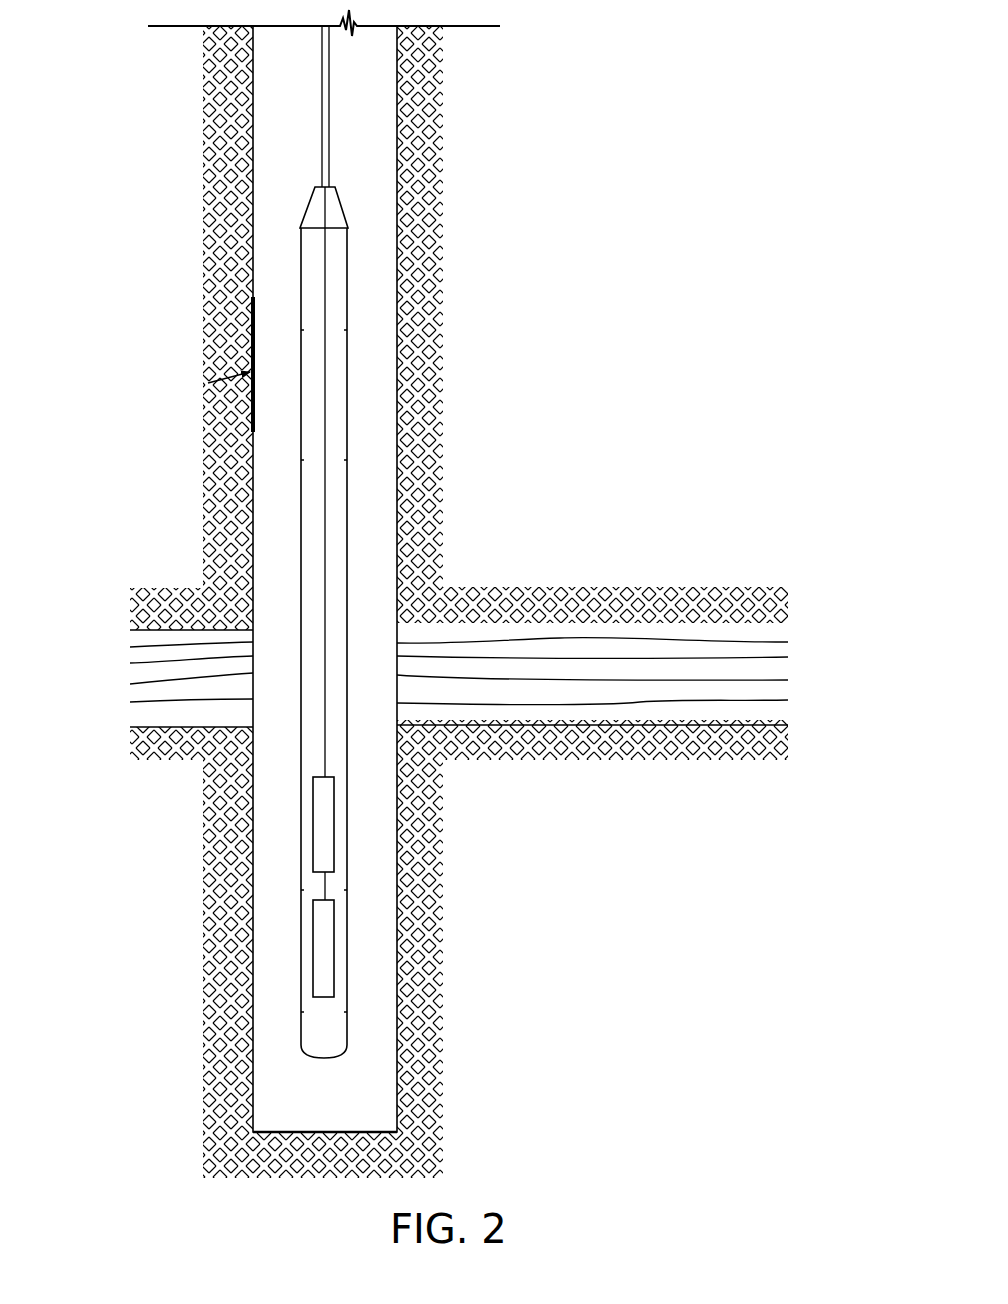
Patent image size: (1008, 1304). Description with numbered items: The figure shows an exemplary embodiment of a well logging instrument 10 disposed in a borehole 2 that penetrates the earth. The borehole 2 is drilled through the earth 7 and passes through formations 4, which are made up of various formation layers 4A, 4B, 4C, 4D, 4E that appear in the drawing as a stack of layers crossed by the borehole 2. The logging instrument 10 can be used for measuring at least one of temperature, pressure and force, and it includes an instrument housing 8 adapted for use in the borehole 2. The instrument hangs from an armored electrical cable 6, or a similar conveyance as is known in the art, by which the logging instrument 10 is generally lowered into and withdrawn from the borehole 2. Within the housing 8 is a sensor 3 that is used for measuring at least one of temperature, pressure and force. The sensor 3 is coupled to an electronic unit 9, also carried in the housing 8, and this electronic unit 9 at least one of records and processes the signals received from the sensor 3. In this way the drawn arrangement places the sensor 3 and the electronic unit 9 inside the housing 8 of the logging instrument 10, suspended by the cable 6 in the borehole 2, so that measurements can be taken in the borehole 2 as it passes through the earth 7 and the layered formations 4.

The borehole 2 is at (375, 103).
The sensor 3 is at (313, 918).
The formations 4 is at (128, 677).
The formation layer 4A is at (790, 630).
The formation layer 4B is at (785, 650).
The formation layer 4C is at (783, 668).
The formation layer 4D is at (787, 690).
The formation layer 4E is at (787, 712).
The armored electrical cable 6 is at (322, 110).
The earth 7 is at (425, 962).
The instrument housing 8 is at (301, 580).
The electronic unit 9 is at (313, 793).
The well logging instrument 10 is at (368, 297).